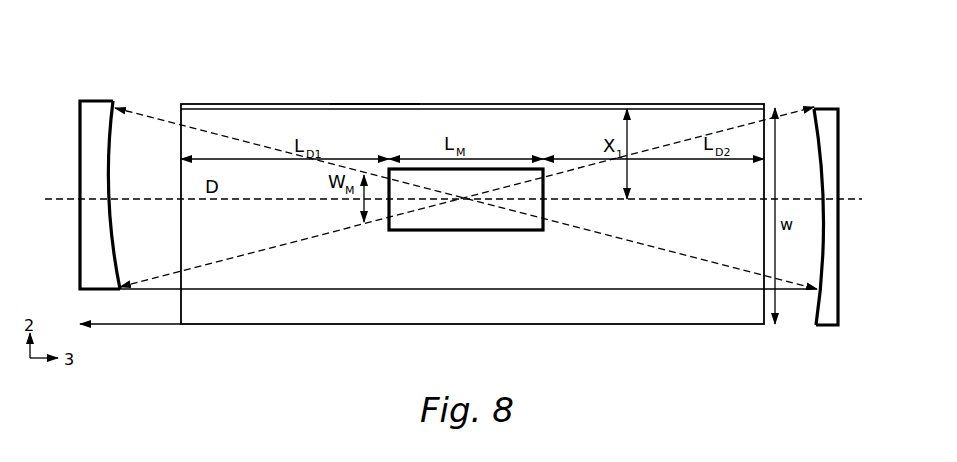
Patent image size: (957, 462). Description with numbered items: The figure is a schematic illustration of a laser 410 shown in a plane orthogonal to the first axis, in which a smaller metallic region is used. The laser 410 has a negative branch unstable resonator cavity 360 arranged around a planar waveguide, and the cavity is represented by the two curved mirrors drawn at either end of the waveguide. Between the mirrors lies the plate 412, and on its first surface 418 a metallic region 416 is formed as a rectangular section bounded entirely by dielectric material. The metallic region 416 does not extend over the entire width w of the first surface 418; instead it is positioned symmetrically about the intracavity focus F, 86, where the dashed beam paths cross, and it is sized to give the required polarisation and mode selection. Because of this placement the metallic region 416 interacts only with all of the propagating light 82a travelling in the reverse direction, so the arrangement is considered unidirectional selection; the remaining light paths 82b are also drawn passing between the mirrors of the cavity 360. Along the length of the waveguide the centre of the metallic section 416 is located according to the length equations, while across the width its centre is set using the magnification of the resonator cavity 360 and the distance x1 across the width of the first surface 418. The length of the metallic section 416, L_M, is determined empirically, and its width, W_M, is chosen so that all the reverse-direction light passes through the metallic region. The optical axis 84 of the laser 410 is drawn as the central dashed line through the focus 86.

The laser 410 is at (717, 94).
The plate 412 is at (210, 104).
The propagating light in the reverse direction 82a is at (247, 143).
The second discharge path 82b is at (373, 104).
The metallic region 416 is at (497, 169).
The negative branch unstable resonator cavity 360 is at (842, 141).
The rear mirror / optical axis 84 is at (60, 199).
The first surface 418 is at (468, 270).
The intracavity focus 86 is at (467, 198).